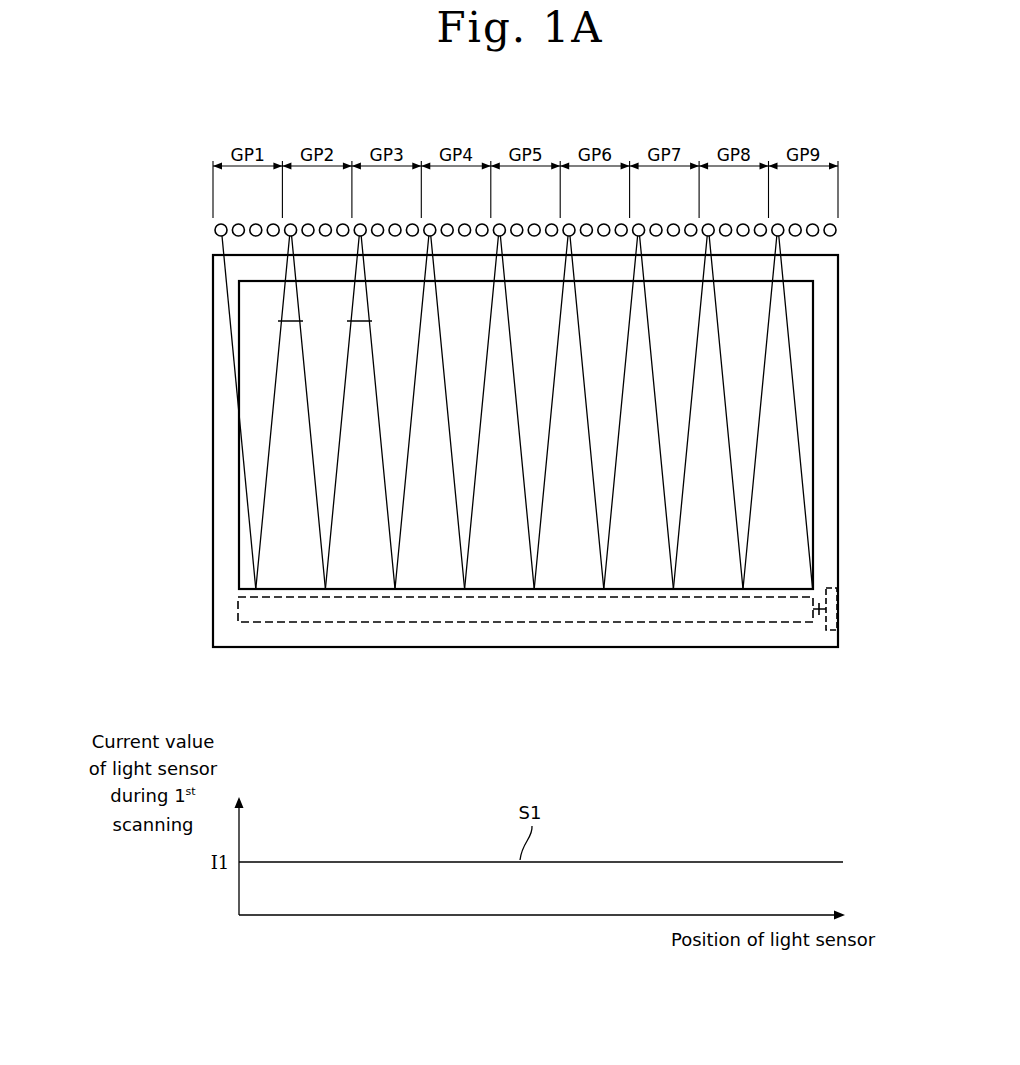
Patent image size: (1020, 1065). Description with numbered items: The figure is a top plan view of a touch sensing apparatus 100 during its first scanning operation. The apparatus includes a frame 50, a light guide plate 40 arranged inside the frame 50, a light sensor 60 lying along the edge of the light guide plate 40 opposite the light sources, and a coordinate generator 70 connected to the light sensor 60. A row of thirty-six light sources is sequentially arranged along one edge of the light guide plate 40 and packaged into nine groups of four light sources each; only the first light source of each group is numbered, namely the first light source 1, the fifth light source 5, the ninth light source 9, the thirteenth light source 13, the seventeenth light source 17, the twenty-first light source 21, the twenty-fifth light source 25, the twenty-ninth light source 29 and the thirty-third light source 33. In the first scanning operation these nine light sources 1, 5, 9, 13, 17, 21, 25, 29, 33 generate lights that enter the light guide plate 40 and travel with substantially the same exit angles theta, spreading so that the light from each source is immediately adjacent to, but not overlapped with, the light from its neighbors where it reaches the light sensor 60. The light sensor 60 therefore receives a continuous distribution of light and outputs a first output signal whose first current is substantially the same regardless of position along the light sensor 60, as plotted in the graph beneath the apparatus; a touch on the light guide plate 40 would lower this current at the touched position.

The first light source 1 is at (223, 224).
The fifth light source 5 is at (293, 224).
The ninth light source 9 is at (362, 224).
The thirteenth light source 13 is at (432, 224).
The seventeenth light source 17 is at (501, 224).
The twenty-first light source 21 is at (571, 224).
The twenty-fifth light source 25 is at (641, 224).
The twenty-ninth light source 29 is at (710, 224).
The thirty-third light source 33 is at (780, 224).
The light guide plate 40 is at (813, 448).
The frame 50 is at (830, 372).
The light sensor 60 is at (680, 624).
The coordinate generator 70 is at (836, 588).
The touch sensing apparatus 100 is at (559, 436).